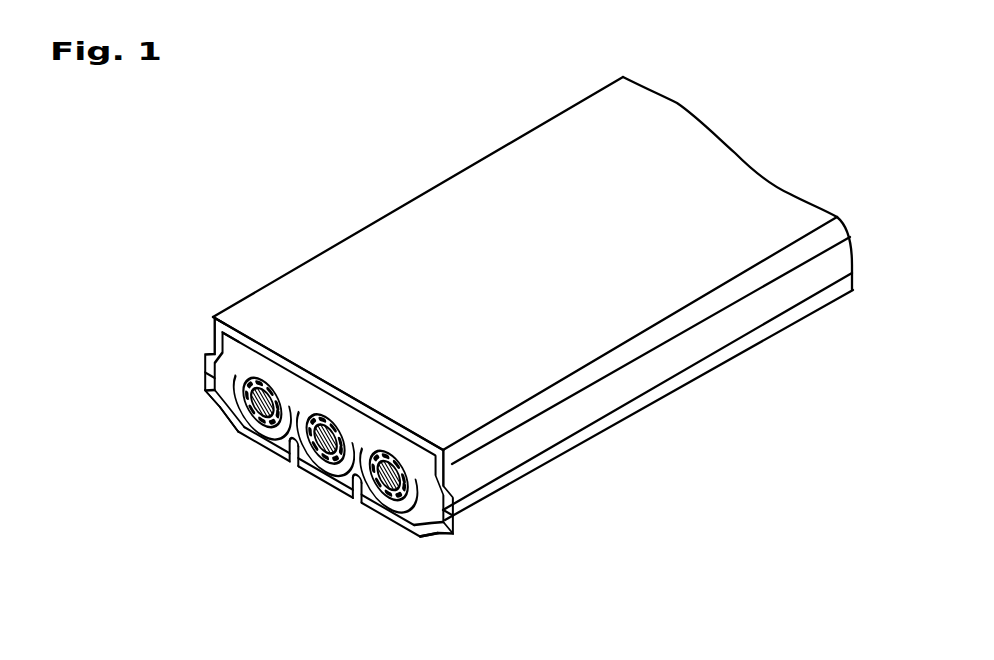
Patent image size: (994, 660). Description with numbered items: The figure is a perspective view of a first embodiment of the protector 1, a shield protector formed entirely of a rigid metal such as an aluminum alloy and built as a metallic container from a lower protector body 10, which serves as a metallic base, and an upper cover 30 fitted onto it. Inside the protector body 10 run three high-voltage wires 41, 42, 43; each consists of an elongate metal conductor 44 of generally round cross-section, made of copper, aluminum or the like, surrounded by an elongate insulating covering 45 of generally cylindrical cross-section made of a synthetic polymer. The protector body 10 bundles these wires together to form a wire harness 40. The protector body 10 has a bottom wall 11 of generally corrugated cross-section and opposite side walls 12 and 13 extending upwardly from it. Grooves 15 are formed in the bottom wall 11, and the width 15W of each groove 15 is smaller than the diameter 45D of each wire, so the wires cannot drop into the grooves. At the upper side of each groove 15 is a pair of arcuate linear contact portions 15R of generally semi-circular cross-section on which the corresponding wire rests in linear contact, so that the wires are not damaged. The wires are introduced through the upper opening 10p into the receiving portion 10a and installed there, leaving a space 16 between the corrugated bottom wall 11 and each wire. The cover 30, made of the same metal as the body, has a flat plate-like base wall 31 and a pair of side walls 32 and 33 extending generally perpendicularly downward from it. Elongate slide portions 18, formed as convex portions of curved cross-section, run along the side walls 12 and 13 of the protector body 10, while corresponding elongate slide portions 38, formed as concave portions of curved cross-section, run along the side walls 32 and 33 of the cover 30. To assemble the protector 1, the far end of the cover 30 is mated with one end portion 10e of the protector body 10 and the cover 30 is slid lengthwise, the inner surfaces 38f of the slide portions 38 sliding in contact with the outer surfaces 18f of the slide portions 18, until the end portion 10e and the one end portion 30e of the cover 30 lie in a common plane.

The protector 1 is at (371, 224).
The protector body 10 is at (739, 357).
The receiving portion 10a is at (272, 345).
The upper opening 10p is at (220, 335).
The one end portion 10e is at (420, 534).
The bottom wall 11 is at (256, 470).
The side wall 12 is at (210, 385).
The side wall 13 is at (445, 448).
The groove 15 is at (242, 462).
The linear contact portion 15R is at (247, 440).
The width of groove 15W is at (324, 536).
The space 16 is at (422, 540).
The slide portion 18 is at (425, 516).
The outer surface 18f is at (455, 478).
The cover 30 is at (474, 161).
The one end portion 30e is at (199, 335).
The base wall 31 is at (668, 120).
The side wall 32 is at (206, 350).
The side wall 33 is at (832, 233).
The slide portion 38 is at (513, 450).
The inner surface 38f is at (460, 466).
The wire harness 40 is at (318, 281).
The high-voltage wire 41 is at (295, 391).
The high-voltage wire 42 is at (352, 420).
The high-voltage wire 43 is at (415, 455).
The metal conductor 44 is at (242, 430).
The insulating covering 45 is at (270, 455).
The diameter of wire 45D is at (362, 495).